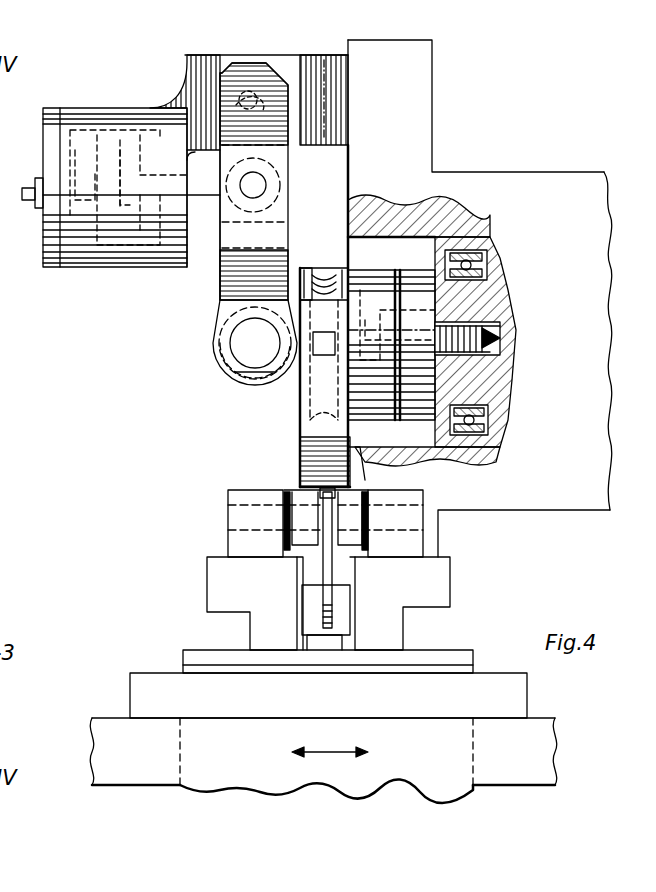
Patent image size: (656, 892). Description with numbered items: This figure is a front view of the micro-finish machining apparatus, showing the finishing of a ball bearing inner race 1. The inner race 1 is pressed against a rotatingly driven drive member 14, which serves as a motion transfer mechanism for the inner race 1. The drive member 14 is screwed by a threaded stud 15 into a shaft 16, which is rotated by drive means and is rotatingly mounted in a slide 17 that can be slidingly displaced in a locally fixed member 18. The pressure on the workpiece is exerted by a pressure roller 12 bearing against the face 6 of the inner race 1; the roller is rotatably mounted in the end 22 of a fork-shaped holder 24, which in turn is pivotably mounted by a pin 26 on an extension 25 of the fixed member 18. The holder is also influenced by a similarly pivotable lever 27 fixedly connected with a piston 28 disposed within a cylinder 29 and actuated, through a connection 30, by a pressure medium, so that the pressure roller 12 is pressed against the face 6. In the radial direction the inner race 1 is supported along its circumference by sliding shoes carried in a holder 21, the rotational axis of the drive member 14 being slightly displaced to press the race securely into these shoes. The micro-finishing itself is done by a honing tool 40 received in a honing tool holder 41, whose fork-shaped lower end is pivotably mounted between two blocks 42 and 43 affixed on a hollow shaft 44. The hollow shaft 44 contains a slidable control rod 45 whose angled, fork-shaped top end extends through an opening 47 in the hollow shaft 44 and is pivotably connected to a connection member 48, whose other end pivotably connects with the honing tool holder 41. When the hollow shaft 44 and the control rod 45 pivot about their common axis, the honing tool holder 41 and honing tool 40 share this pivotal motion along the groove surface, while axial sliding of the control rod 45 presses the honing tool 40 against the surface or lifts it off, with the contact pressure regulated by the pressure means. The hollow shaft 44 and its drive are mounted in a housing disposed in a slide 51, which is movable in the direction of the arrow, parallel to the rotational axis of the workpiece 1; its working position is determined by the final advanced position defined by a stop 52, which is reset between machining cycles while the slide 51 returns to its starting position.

The ball bearing inner race 1 is at (320, 262).
The face of the inner race 6 is at (306, 268).
The pressure roller 12 is at (230, 360).
The drive member 14 is at (368, 300).
The threaded stud 15 is at (505, 328).
The shaft 16 is at (485, 298).
The slide 17 is at (455, 248).
The locally fixed member 18 is at (415, 105).
The holder 21 is at (322, 470).
The end of fork-shaped holder 22 is at (236, 300).
The fork-shaped holder 24 is at (275, 178).
The extension 25 is at (330, 93).
The pin 26 is at (235, 100).
The lever 27 is at (208, 200).
The piston 28 is at (106, 138).
The cylinder 29 is at (78, 152).
The connection 30 is at (28, 200).
The honing tool 40 is at (320, 348).
The honing tool holder 41 is at (295, 482).
The block 42 is at (245, 545).
The block 43 is at (410, 543).
The hollow shaft 44 is at (418, 580).
The control rod 45 is at (324, 653).
The opening 47 is at (343, 643).
The connection member 48 is at (325, 570).
The slide 51 is at (525, 735).
The stop 52 is at (358, 750).